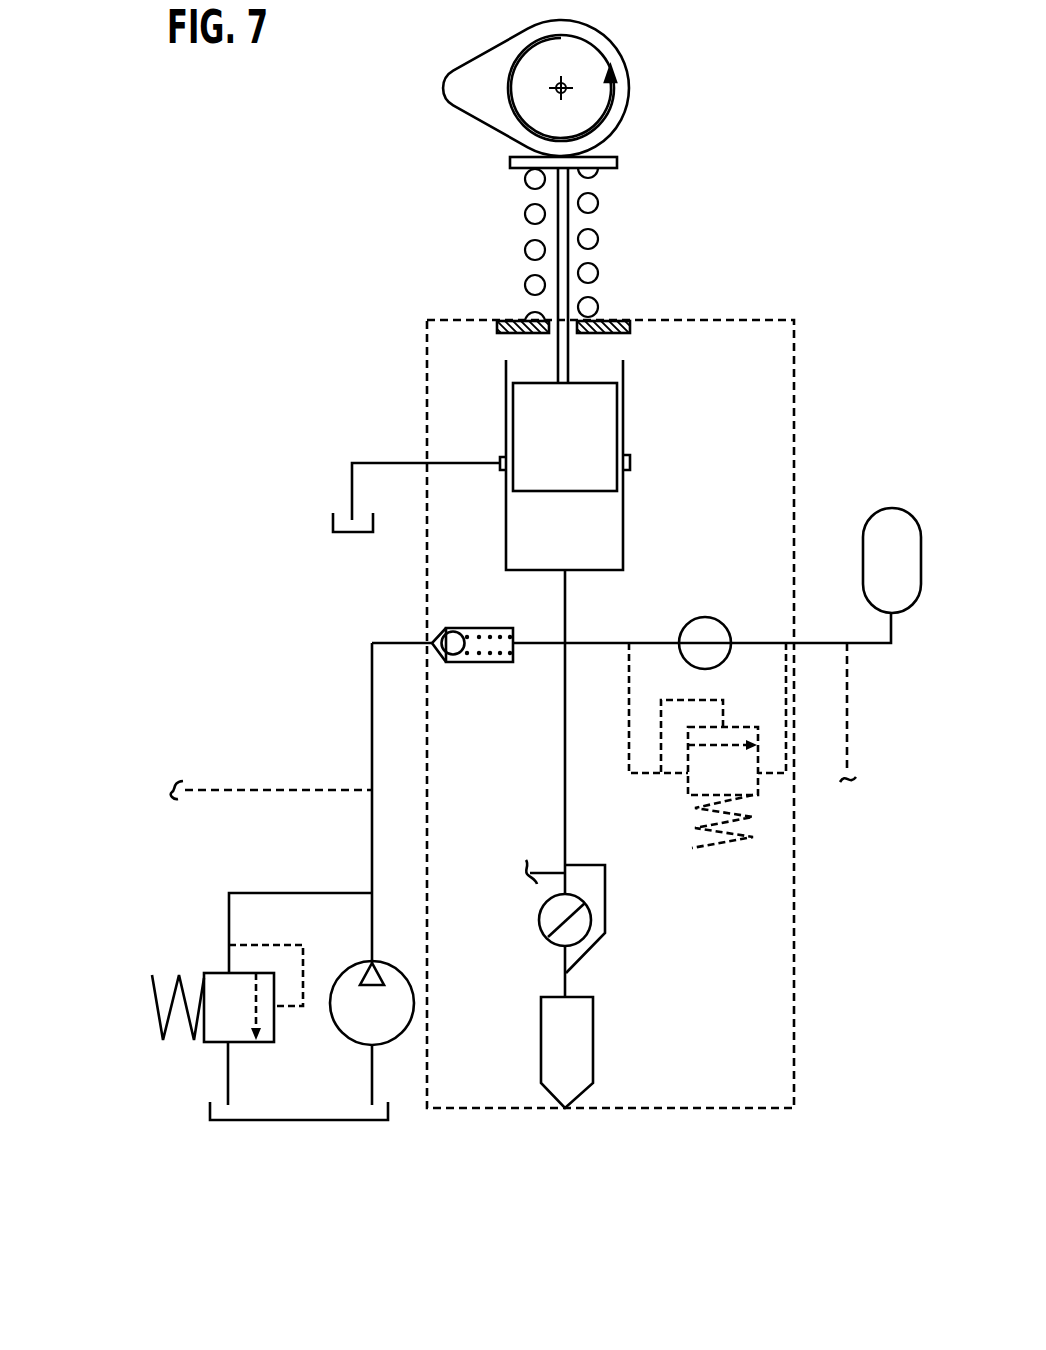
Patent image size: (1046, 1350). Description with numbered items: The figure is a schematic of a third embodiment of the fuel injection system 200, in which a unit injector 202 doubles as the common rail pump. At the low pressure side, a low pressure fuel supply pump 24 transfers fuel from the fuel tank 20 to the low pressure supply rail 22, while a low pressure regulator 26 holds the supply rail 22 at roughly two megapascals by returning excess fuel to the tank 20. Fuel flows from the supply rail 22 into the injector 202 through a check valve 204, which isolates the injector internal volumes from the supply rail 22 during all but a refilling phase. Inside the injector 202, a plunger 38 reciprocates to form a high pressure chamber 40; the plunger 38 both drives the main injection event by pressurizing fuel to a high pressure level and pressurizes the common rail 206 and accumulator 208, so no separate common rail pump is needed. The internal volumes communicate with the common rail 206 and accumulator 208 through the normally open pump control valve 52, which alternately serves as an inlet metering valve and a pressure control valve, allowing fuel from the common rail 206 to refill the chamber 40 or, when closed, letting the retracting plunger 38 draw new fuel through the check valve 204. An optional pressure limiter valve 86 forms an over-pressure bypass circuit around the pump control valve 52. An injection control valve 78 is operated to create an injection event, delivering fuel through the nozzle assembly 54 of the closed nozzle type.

The fuel injection system 200 is at (761, 155).
The unit injector 202 is at (793, 335).
The plunger 38 is at (588, 441).
The high pressure chamber 40 is at (588, 555).
The check valve 204 is at (492, 663).
The common rail 206 is at (809, 643).
The accumulator 208 is at (892, 508).
The pump control valve 52 is at (707, 617).
The pressure limiter valve 86 is at (684, 774).
The injection control valve 78 is at (538, 917).
The nozzle assembly 54 is at (593, 1037).
The low pressure supply rail 22 is at (372, 834).
The low pressure regulator 26 is at (204, 1043).
The low pressure fuel supply pump 24 is at (343, 1040).
The fuel tank 20 is at (307, 1120).